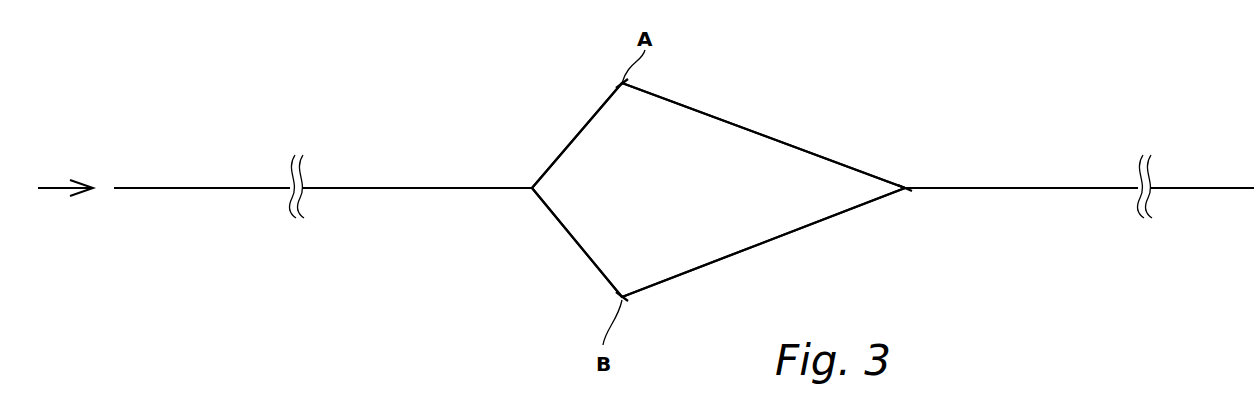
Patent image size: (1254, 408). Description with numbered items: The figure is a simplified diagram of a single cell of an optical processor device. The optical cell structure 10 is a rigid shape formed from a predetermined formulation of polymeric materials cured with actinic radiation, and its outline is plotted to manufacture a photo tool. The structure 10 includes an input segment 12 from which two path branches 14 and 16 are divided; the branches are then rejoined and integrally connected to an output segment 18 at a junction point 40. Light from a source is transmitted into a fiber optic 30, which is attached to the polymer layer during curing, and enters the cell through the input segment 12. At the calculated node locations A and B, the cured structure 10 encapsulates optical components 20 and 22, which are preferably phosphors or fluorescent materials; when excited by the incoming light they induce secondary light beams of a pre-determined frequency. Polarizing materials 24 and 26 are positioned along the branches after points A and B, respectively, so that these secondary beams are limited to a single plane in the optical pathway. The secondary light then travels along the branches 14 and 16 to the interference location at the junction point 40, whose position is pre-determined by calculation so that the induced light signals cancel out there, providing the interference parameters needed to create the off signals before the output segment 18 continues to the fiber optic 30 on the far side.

The optical cell structure 10 is at (798, 146).
The input segment 12 is at (478, 189).
The path branch 14 is at (571, 145).
The path branch 16 is at (583, 248).
The output segment 18 is at (1075, 187).
The optical component 20 is at (624, 86).
The optical component 22 is at (623, 293).
The polarizing material 24 is at (655, 92).
The polarizing material 26 is at (637, 297).
The fiber optic 30 is at (220, 188).
The junction point 40 is at (907, 187).